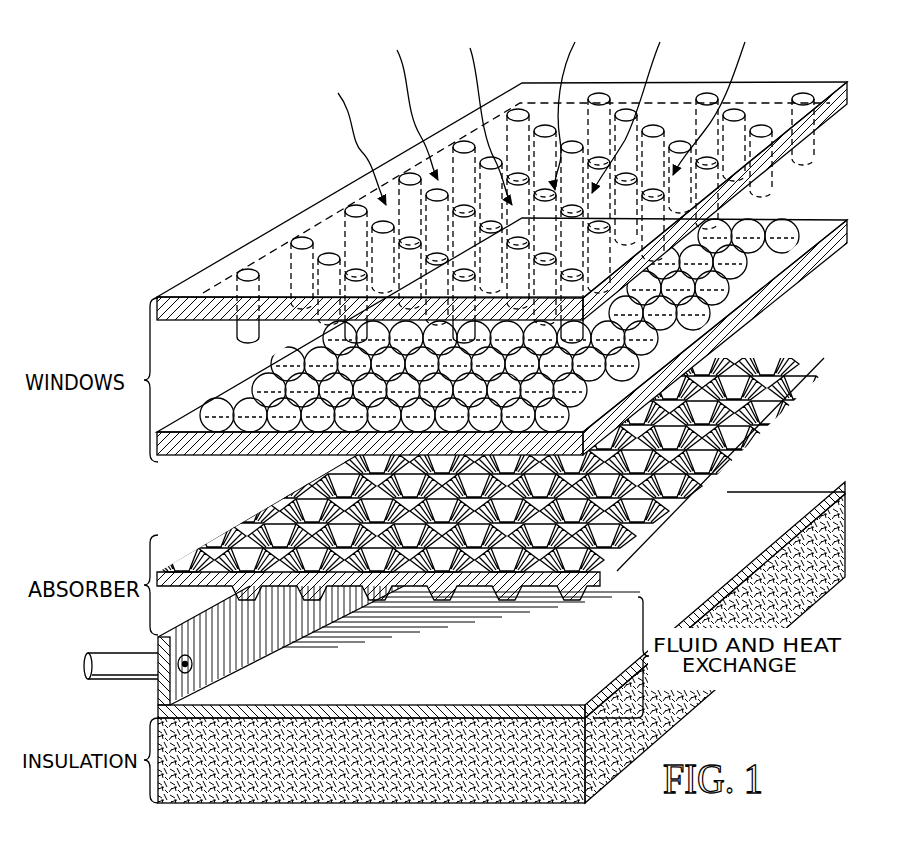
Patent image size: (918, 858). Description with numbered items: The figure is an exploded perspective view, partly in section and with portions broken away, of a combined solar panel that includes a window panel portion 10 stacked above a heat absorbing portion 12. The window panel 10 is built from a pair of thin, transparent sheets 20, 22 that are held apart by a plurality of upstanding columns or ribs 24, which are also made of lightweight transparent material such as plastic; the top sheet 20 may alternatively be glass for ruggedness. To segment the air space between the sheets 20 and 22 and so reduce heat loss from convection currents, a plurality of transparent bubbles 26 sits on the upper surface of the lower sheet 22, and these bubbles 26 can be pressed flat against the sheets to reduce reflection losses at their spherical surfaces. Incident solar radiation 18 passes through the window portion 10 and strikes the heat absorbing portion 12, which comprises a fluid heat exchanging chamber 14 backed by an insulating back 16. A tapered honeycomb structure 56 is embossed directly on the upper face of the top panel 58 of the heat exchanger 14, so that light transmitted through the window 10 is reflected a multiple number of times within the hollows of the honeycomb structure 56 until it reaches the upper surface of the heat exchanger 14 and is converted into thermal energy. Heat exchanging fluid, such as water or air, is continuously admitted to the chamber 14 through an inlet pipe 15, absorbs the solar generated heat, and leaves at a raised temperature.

The window panel portion 10 is at (127, 424).
The heat absorbing portion 12 is at (491, 462).
The fluid heat exchanging chamber 14 is at (156, 700).
The inlet pipe 15 is at (138, 683).
The insulating back 16 is at (132, 776).
The incident solar radiation 18 is at (362, 146).
The top sheet 20 is at (219, 260).
The transparent sheet 22 is at (234, 457).
The upstanding columns or ribs 24 is at (249, 341).
The transparent bubbles 26 is at (220, 409).
The tapered honeycomb structure 56 is at (238, 540).
The top panel 58 is at (195, 588).